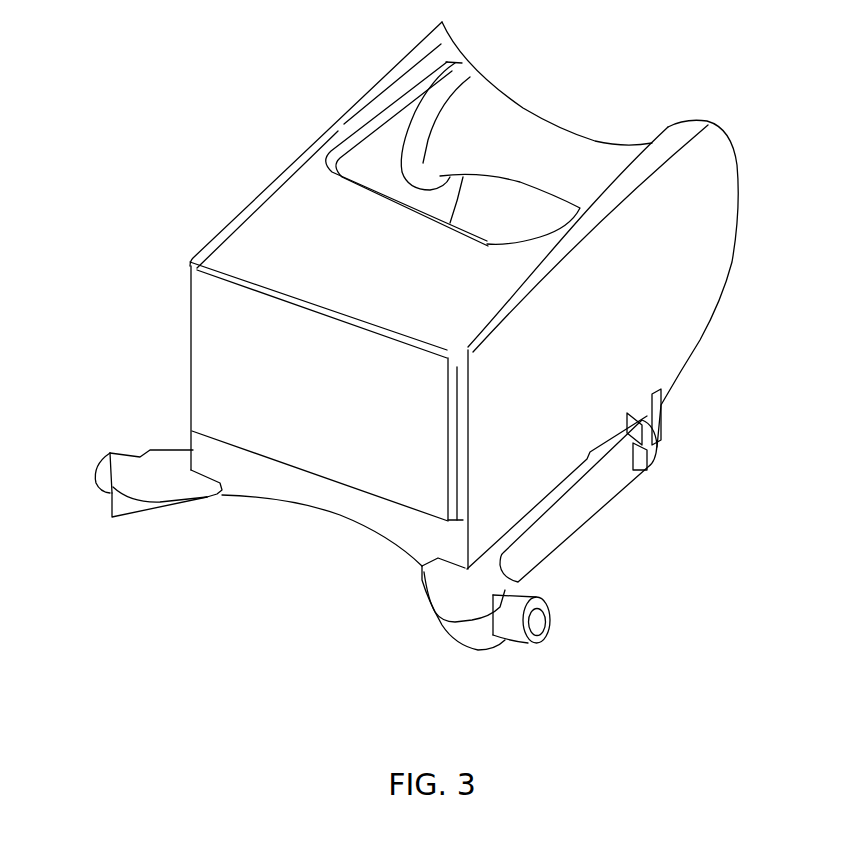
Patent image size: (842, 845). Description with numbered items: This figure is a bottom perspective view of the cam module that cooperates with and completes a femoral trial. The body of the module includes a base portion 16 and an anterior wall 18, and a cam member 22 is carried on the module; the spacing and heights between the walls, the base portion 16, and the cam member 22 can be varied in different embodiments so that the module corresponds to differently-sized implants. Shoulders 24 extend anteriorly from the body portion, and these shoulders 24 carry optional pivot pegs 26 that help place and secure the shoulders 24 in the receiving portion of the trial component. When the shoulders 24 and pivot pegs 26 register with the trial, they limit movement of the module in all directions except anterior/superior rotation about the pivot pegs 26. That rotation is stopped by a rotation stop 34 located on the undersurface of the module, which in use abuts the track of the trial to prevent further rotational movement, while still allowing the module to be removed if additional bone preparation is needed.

The base portion 16 is at (315, 245).
The anterior wall 18 is at (242, 343).
The cam member 22 is at (547, 150).
The shoulders 24 is at (172, 465).
The pivot pegs 26 is at (478, 650).
The rotation stop 34 is at (588, 474).